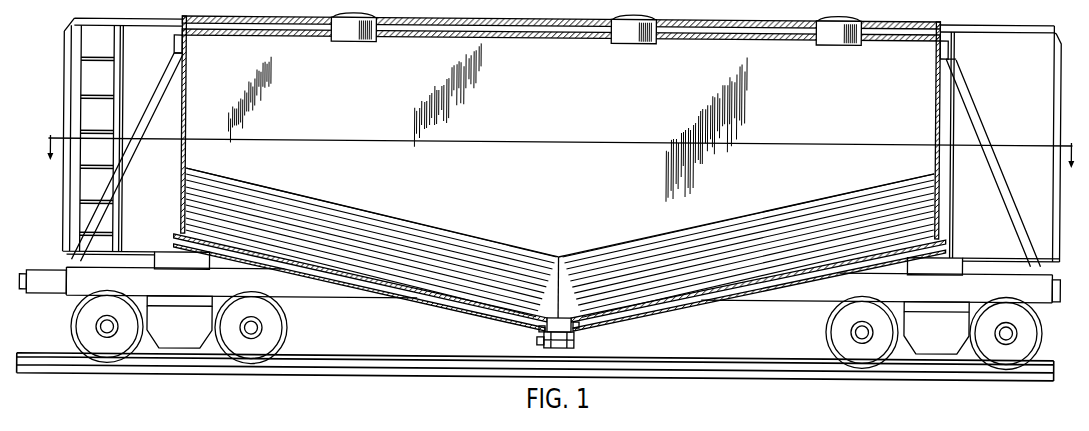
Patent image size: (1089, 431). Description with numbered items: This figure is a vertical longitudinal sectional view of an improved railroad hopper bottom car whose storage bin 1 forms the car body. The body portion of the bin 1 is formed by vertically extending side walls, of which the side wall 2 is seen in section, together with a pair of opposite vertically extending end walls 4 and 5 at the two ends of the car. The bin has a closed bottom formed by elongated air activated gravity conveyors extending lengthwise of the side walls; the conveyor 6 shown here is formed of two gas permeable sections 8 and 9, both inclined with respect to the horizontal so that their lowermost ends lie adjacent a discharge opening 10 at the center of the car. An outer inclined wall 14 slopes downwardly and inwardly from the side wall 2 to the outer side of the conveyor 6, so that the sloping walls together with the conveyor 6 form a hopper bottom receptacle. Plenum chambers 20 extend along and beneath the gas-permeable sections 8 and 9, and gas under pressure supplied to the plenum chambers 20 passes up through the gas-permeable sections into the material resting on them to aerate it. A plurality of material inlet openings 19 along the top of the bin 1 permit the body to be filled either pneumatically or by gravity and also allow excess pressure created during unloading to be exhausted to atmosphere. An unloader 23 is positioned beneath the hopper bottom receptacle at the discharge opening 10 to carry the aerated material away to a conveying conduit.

The storage bin 1 is at (922, 22).
The side wall 2 is at (965, 69).
The end wall 4 is at (942, 161).
The end wall 5 is at (180, 153).
The air activated gravity conveyor 6 is at (448, 294).
The gas permeable section 8 is at (512, 308).
The gas permeable section 9 is at (608, 308).
The discharge opening 10 is at (562, 318).
The outer inclined wall 14 is at (848, 197).
The material inlet opening 19 is at (362, 15).
The plenum chamber 20 is at (483, 308).
The unloader 23 is at (575, 337).